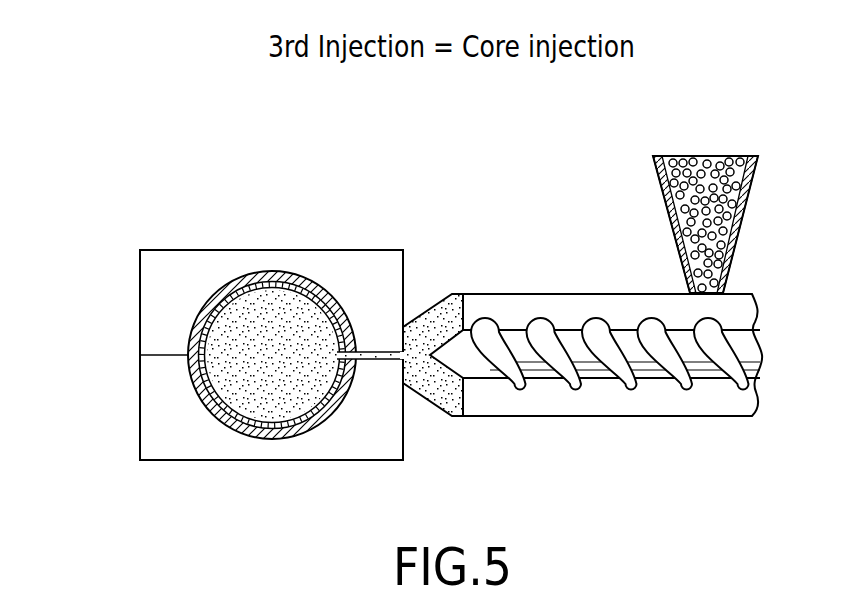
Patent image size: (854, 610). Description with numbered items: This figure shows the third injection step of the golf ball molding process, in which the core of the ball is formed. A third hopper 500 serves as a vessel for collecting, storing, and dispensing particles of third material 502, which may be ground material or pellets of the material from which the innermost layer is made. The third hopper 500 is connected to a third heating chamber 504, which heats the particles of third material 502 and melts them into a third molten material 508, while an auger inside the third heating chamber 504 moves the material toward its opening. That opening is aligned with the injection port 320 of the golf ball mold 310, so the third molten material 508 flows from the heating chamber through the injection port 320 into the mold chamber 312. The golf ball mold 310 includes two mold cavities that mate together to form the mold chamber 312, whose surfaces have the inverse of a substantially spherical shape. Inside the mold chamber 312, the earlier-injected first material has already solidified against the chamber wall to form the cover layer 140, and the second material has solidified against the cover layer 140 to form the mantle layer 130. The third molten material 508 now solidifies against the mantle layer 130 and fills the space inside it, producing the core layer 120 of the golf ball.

The core layer 120 is at (285, 325).
The mantle layer 130 is at (230, 297).
The cover layer 140 is at (197, 327).
The golf ball mold 310 is at (175, 412).
The mold chamber 312 is at (268, 272).
The injection port 320 is at (403, 362).
The third hopper 500 is at (703, 153).
The particles of third material 502 is at (722, 232).
The third heating chamber 504 is at (638, 416).
The third molten material 508 is at (447, 322).